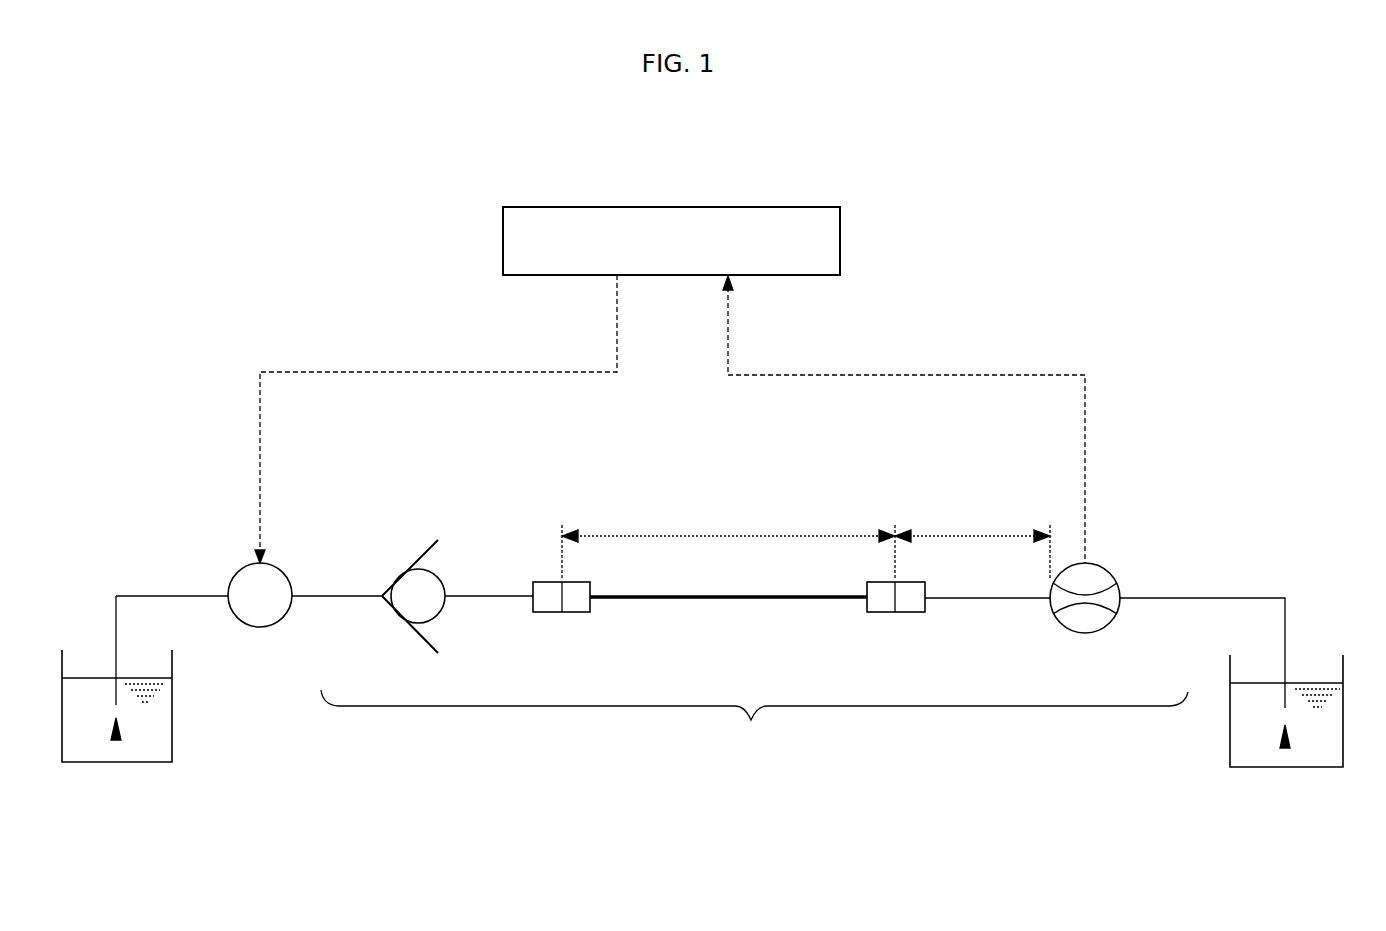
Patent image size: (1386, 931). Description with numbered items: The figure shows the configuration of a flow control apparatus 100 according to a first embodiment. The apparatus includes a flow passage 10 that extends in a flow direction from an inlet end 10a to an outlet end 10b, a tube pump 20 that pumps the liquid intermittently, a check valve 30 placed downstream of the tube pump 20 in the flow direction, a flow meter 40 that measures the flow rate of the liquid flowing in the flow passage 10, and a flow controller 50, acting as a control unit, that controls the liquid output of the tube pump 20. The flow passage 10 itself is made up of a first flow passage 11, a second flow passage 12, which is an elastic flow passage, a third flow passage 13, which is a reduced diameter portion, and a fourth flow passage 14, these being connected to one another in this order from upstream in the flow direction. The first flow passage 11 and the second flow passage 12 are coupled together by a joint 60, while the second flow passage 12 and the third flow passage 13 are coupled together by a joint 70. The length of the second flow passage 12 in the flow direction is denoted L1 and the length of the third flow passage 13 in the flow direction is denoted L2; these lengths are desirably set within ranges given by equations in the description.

The flow control apparatus 100 is at (1037, 218).
The flow controller 50 is at (670, 205).
The tube pump 20 is at (237, 572).
The check valve 30 is at (398, 572).
The joint 60 is at (575, 614).
The joint 70 is at (908, 614).
The flow meter 40 is at (1105, 567).
The flow passage 10 is at (754, 724).
The first flow passage 11 is at (340, 598).
The second flow passage 12 is at (688, 601).
The third flow passage 13 is at (995, 600).
The fourth flow passage 14 is at (1152, 600).
The inlet end 10a is at (114, 744).
The outlet end 10b is at (1284, 752).
The length of the second flow passage L1 is at (728, 543).
The length of the third flow passage L2 is at (972, 543).